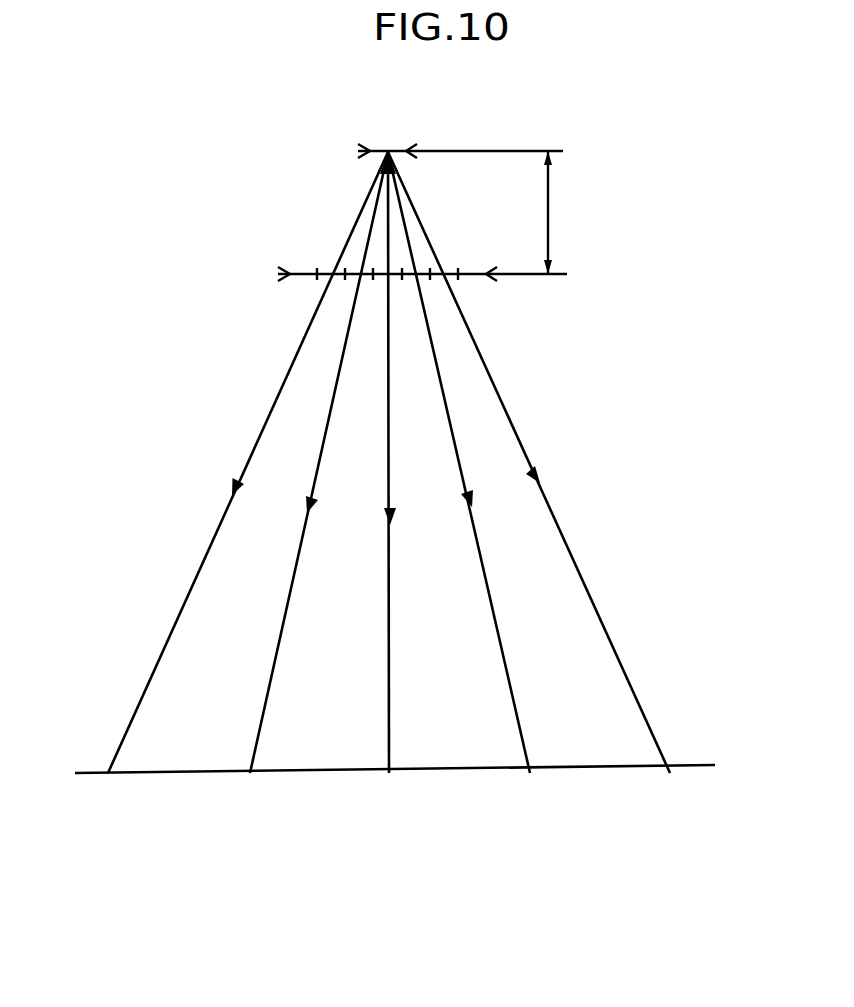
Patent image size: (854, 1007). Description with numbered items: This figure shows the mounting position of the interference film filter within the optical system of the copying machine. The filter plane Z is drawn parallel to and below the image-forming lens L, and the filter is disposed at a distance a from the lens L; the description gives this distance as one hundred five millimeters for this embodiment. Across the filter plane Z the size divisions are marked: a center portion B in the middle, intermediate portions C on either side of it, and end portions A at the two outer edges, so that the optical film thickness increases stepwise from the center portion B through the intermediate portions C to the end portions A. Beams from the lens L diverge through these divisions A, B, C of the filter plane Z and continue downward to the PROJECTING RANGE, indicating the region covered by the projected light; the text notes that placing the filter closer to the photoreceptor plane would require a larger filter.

The image-forming lens L is at (377, 145).
The zone plane / projection pattern line Z is at (304, 268).
The distance a is at (556, 212).
The end portions A is at (364, 298).
The center portion B is at (369, 298).
The intermediate portions C is at (371, 298).
The projecting range PROJECTING RANGE is at (262, 773).